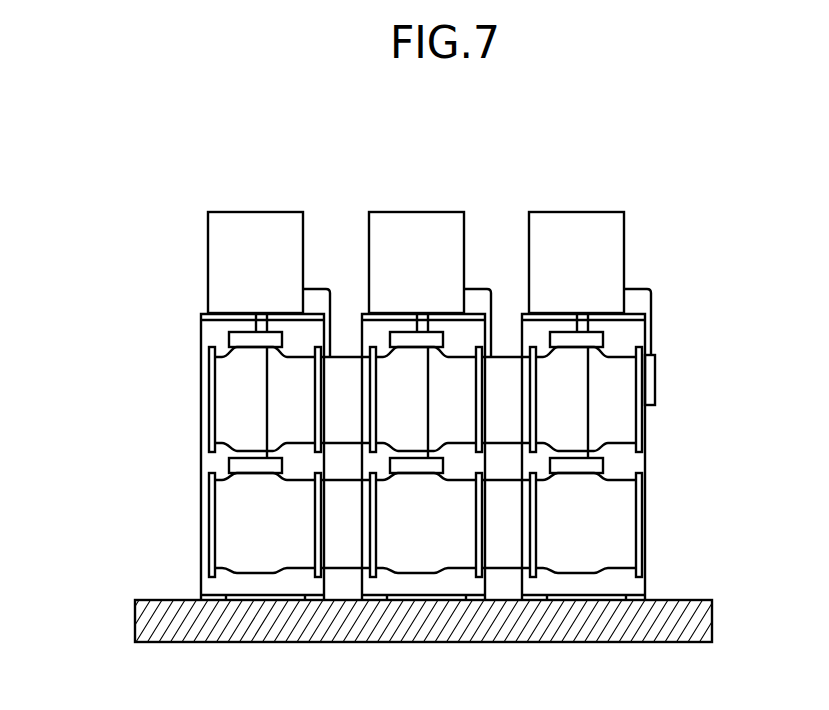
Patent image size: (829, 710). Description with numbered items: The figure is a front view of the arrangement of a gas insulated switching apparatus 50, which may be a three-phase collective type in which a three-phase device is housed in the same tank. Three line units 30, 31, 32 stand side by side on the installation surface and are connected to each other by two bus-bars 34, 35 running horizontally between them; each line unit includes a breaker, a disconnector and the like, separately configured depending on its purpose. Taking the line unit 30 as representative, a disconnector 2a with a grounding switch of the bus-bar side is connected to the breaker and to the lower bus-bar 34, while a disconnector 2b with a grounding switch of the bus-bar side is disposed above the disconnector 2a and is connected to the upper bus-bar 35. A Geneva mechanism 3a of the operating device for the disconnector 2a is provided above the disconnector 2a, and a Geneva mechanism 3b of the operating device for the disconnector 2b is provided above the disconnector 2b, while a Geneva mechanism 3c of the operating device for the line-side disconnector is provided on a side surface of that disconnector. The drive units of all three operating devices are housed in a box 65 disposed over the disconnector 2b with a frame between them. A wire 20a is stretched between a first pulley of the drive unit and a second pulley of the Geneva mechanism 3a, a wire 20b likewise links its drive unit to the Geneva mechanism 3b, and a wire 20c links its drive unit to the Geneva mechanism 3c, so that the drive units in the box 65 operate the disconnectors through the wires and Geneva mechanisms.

The gas insulated switching apparatus 50 is at (283, 163).
The box 65 is at (548, 220).
The wire 20b is at (578, 327).
The bus-bar 35 is at (508, 363).
The wire 20c is at (643, 290).
The Geneva mechanism 3b is at (603, 338).
The Geneva mechanism 3c is at (655, 383).
The disconnector with grounding switch 2b is at (623, 420).
The wire 20a is at (590, 431).
The Geneva mechanism 3a is at (603, 462).
The disconnector with grounding switch 2a is at (623, 527).
The line unit 32 is at (267, 580).
The bus-bar 34 is at (347, 557).
The line unit 31 is at (422, 580).
The line unit 30 is at (583, 580).